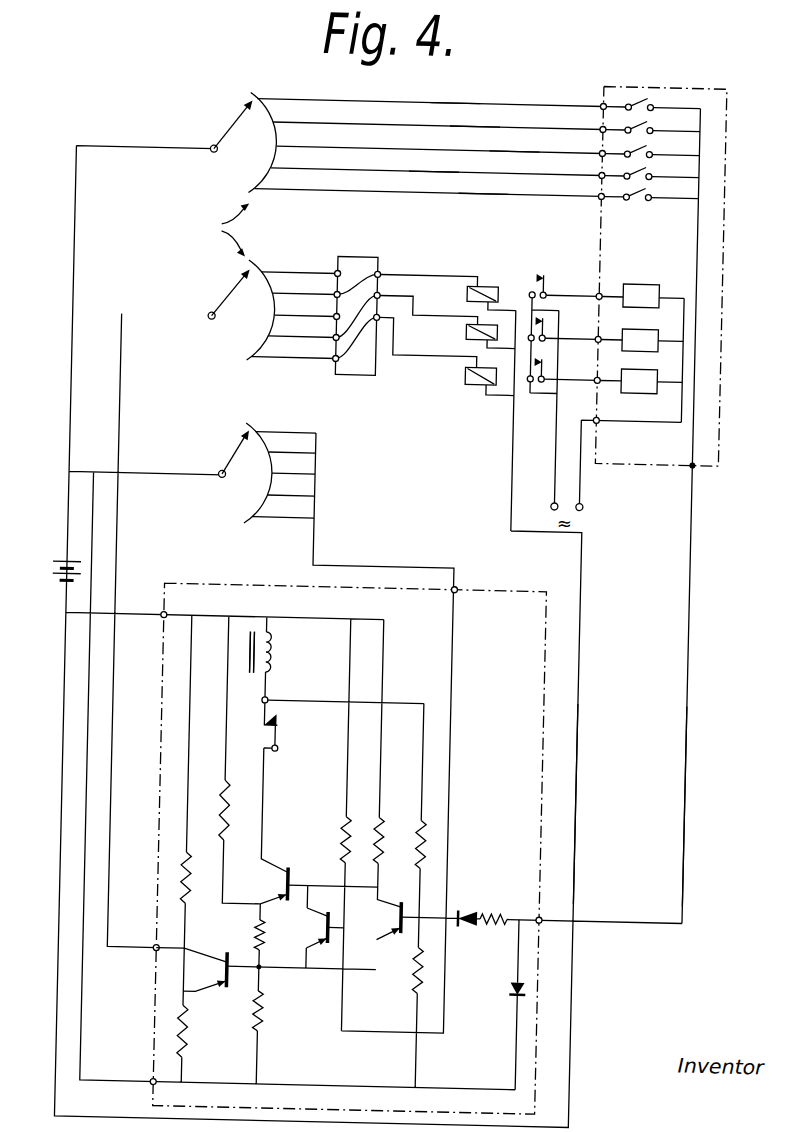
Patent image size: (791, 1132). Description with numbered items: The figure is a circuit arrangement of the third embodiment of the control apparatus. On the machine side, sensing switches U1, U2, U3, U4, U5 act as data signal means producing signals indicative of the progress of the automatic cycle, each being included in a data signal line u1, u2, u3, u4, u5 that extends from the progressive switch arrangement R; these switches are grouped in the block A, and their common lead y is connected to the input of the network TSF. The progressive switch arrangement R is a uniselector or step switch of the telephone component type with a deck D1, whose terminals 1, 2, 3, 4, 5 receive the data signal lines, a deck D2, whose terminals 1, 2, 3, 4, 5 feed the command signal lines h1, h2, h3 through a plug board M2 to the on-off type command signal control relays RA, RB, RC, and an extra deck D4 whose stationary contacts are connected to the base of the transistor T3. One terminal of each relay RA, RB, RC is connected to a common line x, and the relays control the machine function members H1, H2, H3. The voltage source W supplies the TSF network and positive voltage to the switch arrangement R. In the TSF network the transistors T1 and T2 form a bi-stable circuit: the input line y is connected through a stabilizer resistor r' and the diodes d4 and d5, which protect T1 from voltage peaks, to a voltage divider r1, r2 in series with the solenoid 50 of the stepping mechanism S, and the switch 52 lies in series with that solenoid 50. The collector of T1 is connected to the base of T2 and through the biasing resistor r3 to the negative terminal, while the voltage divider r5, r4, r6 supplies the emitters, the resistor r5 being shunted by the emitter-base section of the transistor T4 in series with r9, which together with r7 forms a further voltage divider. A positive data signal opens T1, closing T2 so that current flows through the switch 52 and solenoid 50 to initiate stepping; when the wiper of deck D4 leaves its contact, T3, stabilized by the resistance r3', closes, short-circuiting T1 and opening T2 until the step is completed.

The deck D1 is at (204, 146).
The deck D2 is at (206, 314).
The extra deck D4 is at (216, 472).
The progressive switch arrangement R is at (223, 229).
The switch contact position 1 is at (429, 178).
The switch contact position 2 is at (436, 202).
The switch contact position 3 is at (438, 225).
The switch contact position 4 is at (434, 247).
The switch contact position 5 is at (426, 269).
The data signal line u1 is at (430, 93).
The data signal line u2 is at (458, 149).
The data signal line u3 is at (484, 103).
The data signal line u4 is at (408, 173).
The data signal line u5 is at (467, 193).
The sensing switch U1 is at (650, 103).
The sensing switch U2 is at (650, 126).
The sensing switch U3 is at (649, 150).
The sensing switch U4 is at (649, 172).
The sensing switch U5 is at (648, 193).
The switching unit A is at (663, 80).
The plug board M2 is at (356, 302).
The command signal line h1 is at (398, 274).
The command signal line h2 is at (413, 294).
The command signal line h3 is at (389, 337).
The command signal control relay RA is at (479, 285).
The command signal control relay RB is at (484, 323).
The command signal control relay RC is at (461, 376).
The heating element 1 H1 is at (607, 291).
The heating element 2 H2 is at (606, 335).
The heating element 3 H3 is at (605, 376).
The voltage source W is at (53, 580).
The network TSF is at (239, 583).
The solenoid 50 is at (276, 640).
The relay S is at (284, 665).
The switch 52 is at (282, 736).
The resistor r1 is at (432, 842).
The resistor r2 is at (422, 986).
The biasing resistor r3 is at (388, 846).
The resistance r3' is at (330, 844).
The resistor r4 is at (262, 942).
The resistor r5 is at (272, 1012).
The resistor r6 is at (233, 818).
The resistor r7 is at (203, 880).
The resistor r9 is at (206, 1034).
The stabilizer resistor r' is at (493, 936).
The transistor T1 is at (404, 934).
The transistor T2 is at (291, 886).
The transistor T3 is at (330, 932).
The transistor T4 is at (230, 958).
The semi-conductor diode d4 is at (472, 910).
The semi-conductor diode d5 is at (518, 986).
The common line x is at (583, 806).
The common lead y is at (692, 806).